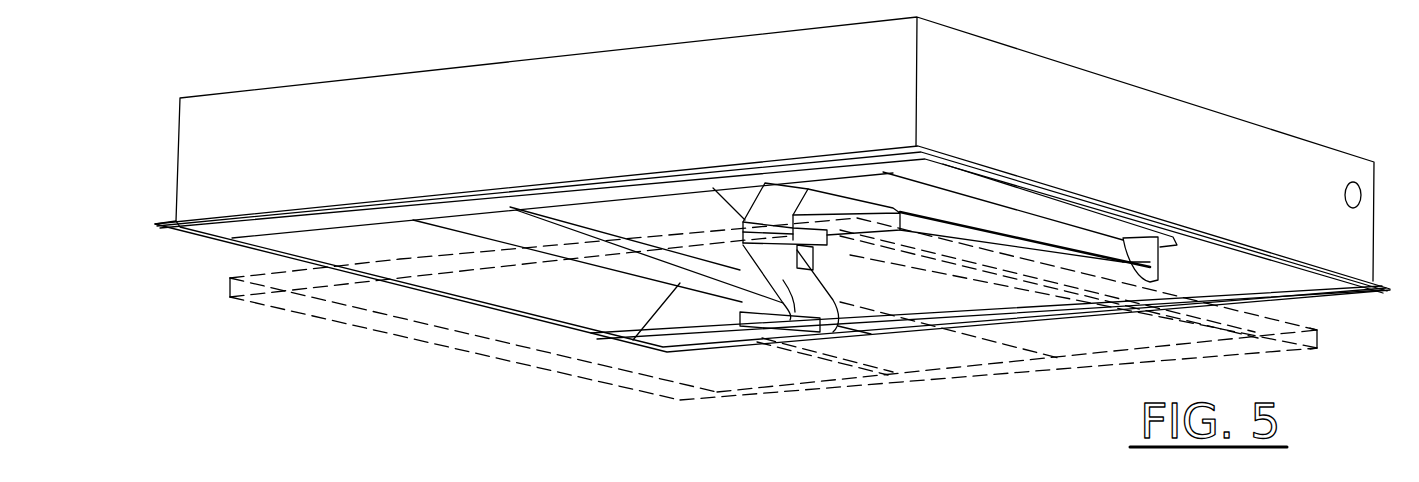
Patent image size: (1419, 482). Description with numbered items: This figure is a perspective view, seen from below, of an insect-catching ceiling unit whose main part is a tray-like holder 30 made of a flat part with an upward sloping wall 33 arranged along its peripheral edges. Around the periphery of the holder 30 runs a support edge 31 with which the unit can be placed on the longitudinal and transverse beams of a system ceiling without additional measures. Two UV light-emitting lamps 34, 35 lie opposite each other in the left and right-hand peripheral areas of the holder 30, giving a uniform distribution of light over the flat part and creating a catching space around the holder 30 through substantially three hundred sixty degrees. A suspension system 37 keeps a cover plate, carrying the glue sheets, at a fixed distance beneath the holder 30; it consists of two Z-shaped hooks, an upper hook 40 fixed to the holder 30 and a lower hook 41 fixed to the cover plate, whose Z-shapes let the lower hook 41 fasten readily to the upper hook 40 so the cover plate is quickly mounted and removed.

The holder 30 is at (157, 330).
The support edge 31 is at (1380, 290).
The upward sloping wall 33 is at (353, 247).
The UV light-emitting lamp 34 is at (490, 232).
The UV light-emitting lamp 35 is at (1123, 262).
The suspension system 37 is at (850, 265).
The upper hook 40 is at (793, 193).
The lower hook 41 is at (845, 337).